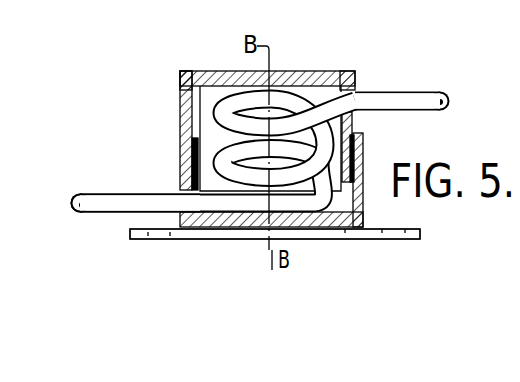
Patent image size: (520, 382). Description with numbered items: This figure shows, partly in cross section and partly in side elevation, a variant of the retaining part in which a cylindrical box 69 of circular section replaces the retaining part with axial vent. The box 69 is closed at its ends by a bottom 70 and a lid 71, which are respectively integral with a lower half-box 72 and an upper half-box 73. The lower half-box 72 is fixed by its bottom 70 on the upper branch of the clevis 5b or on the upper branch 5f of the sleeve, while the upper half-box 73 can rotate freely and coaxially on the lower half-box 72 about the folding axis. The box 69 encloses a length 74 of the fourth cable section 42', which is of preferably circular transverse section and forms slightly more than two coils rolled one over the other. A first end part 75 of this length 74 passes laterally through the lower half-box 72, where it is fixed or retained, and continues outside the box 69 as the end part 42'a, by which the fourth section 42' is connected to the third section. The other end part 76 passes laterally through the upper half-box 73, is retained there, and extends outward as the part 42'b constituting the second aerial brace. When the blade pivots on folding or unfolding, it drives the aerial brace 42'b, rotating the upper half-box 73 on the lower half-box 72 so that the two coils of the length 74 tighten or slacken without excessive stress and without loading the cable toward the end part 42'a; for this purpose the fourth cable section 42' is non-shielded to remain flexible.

The clevis 5b is at (129, 237).
The upper branch of the sleeve 5f is at (275, 234).
The cylindrical box 69 is at (180, 115).
The bottom 70 is at (334, 223).
The lid 71 is at (293, 77).
The lower half-box 72 is at (184, 157).
The upper half-box 73 is at (182, 87).
The length of the fourth cable section 74 is at (223, 107).
The first end part 75 is at (212, 202).
The other end part 76 is at (352, 95).
The fourth cable section 42' is at (268, 111).
The end part of the fourth section 42'a is at (130, 170).
The second aerial brace 42'b is at (429, 81).